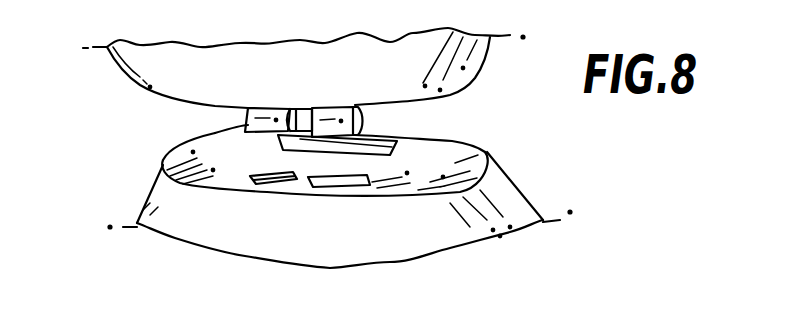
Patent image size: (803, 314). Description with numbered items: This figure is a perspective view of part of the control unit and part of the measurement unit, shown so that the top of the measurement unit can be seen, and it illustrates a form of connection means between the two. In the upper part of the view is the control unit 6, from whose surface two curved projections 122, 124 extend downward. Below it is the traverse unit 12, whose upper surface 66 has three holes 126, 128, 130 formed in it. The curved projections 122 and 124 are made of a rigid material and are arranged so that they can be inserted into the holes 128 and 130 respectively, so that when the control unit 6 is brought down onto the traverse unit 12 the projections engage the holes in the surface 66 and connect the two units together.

The first housing part 6 is at (112, 84).
The traverse unit 12 is at (550, 198).
The surface 66 is at (485, 150).
The curved projection 122 is at (341, 123).
The curved projection 124 is at (247, 119).
The hole 126 is at (395, 152).
The hole 128 is at (331, 197).
The hole 130 is at (267, 188).